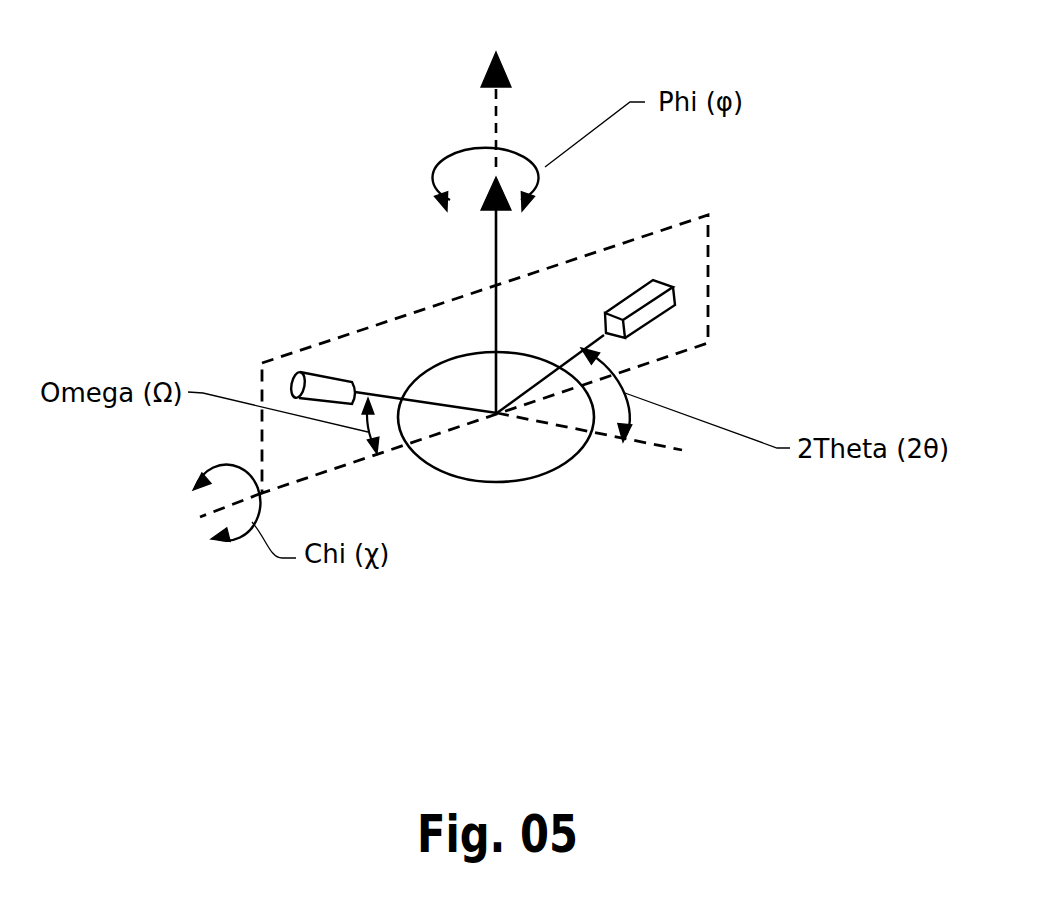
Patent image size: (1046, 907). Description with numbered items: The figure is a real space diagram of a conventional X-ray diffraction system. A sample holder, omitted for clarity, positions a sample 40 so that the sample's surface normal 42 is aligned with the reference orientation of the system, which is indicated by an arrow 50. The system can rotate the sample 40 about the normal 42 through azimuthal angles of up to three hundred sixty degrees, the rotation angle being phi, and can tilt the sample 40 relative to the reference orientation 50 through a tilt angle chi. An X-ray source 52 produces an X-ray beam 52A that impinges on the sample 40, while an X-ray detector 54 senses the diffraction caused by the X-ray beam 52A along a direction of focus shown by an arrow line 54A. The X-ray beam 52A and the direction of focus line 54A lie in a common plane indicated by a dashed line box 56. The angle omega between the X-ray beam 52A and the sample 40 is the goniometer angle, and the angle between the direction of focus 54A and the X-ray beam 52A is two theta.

The sample 40 is at (525, 480).
The surface normal 42 is at (493, 260).
The reference orientation arrow 50 is at (497, 110).
The X-ray source 52 is at (292, 376).
The X-ray beam 52A is at (385, 400).
The X-ray detector 54 is at (660, 318).
The direction of focus line 54A is at (662, 356).
The dashed line box 56 is at (708, 265).